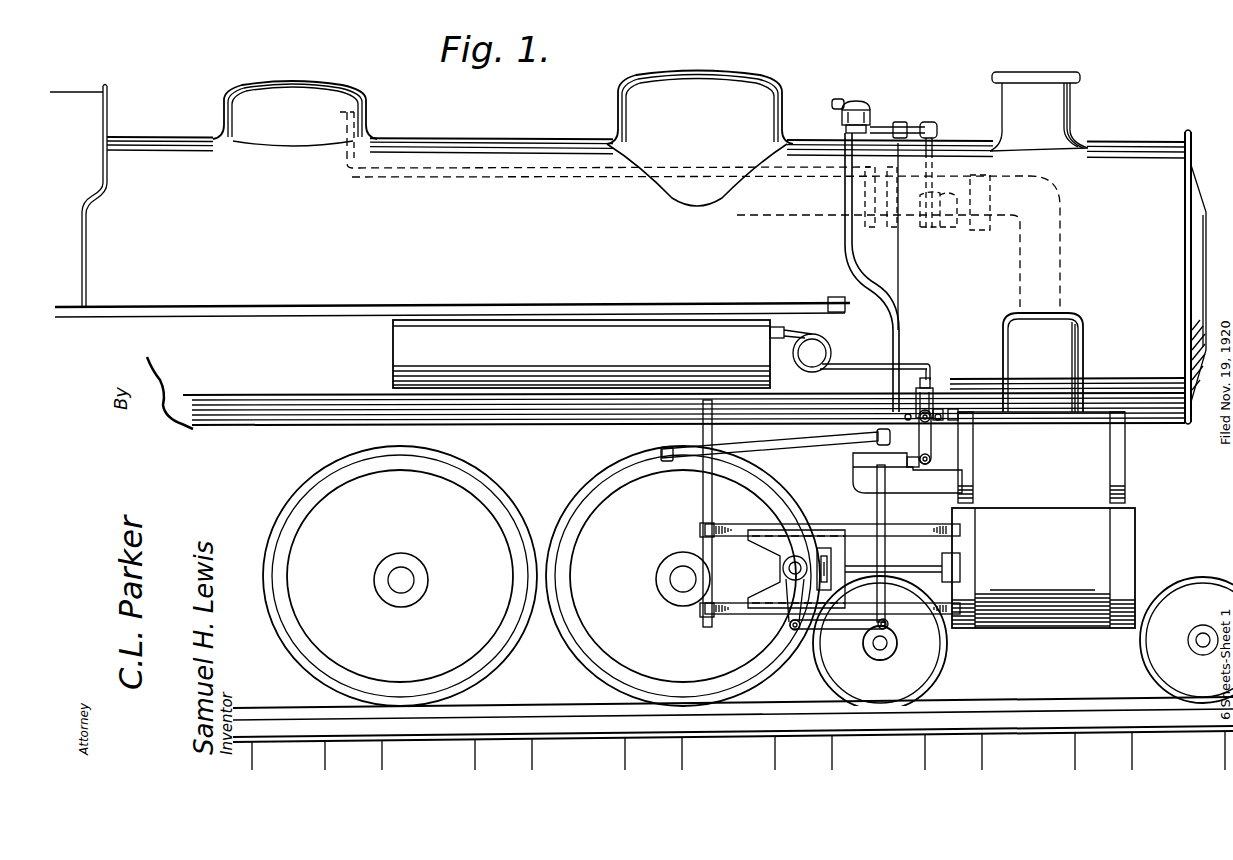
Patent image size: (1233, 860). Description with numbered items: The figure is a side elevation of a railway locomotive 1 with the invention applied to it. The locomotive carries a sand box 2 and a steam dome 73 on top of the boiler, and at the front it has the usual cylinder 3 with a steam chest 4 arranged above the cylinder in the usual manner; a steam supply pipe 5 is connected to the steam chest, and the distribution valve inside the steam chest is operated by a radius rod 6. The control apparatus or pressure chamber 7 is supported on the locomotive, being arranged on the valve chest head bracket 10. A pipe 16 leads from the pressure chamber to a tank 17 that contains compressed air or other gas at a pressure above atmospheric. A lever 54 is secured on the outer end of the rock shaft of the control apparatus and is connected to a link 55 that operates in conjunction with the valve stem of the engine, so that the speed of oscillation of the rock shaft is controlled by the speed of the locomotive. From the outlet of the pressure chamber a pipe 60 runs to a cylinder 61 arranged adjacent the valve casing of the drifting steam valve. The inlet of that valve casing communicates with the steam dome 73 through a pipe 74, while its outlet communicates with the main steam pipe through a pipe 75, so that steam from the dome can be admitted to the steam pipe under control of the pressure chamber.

The railway locomotive 1 is at (1128, 150).
The sand box 2 is at (773, 106).
The cylinder 3 is at (1095, 536).
The steam chest 4 is at (1105, 463).
The steam supply pipe 5 is at (1078, 378).
The radius rod 6 is at (823, 456).
The control apparatus or pressure chamber 7 is at (941, 390).
The valve chest head bracket 10 is at (953, 406).
The pipe 16 is at (846, 368).
The tank 17 is at (690, 316).
The lever 54 is at (923, 438).
The link 55 is at (912, 470).
The pipe 60 is at (845, 262).
The cylinder 61 is at (872, 118).
The steam dome 73 is at (348, 86).
The pipe 74 is at (710, 170).
The pipe 75 is at (908, 130).